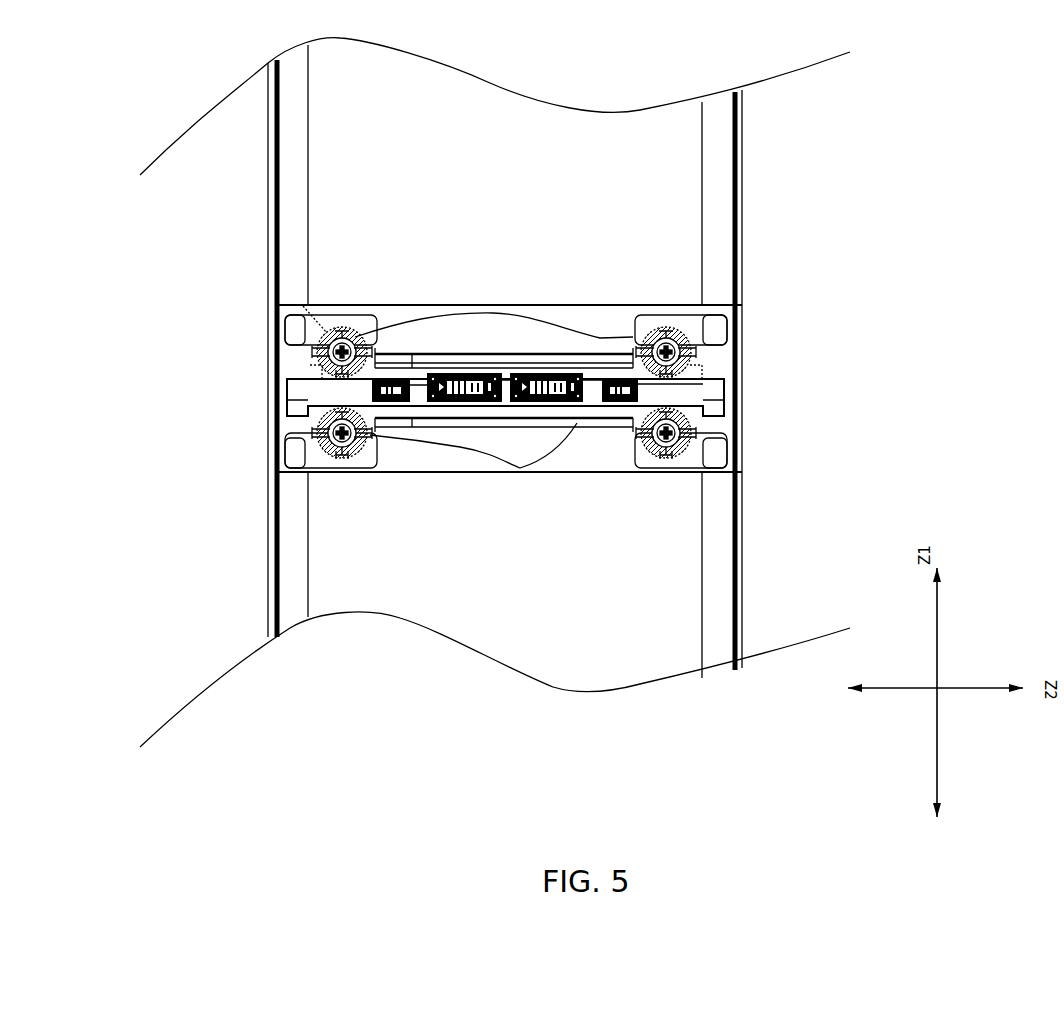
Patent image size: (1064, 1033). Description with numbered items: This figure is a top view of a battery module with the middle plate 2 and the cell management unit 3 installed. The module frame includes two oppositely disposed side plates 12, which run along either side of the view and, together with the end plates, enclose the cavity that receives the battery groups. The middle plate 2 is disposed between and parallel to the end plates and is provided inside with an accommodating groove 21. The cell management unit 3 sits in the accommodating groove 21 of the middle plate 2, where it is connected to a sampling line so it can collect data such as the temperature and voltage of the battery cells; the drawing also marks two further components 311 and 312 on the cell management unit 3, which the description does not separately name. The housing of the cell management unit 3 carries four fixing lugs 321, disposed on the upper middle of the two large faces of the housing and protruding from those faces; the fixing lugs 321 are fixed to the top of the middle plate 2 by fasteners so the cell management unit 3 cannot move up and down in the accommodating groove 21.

The side plate 12 is at (745, 165).
The middle plate 2 is at (390, 472).
The accommodating groove 21 is at (420, 365).
The cell management unit 3 is at (682, 402).
The first sensor 311 is at (550, 373).
The second sensor 312 is at (603, 380).
The fixing lug 321 is at (285, 318).